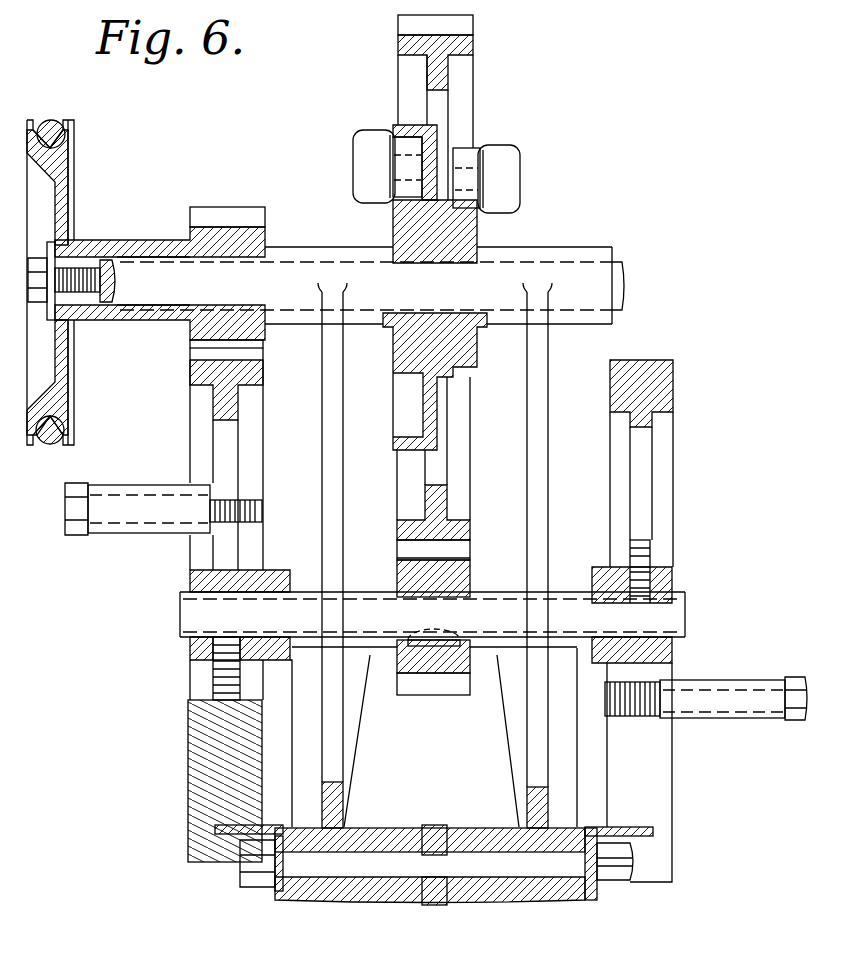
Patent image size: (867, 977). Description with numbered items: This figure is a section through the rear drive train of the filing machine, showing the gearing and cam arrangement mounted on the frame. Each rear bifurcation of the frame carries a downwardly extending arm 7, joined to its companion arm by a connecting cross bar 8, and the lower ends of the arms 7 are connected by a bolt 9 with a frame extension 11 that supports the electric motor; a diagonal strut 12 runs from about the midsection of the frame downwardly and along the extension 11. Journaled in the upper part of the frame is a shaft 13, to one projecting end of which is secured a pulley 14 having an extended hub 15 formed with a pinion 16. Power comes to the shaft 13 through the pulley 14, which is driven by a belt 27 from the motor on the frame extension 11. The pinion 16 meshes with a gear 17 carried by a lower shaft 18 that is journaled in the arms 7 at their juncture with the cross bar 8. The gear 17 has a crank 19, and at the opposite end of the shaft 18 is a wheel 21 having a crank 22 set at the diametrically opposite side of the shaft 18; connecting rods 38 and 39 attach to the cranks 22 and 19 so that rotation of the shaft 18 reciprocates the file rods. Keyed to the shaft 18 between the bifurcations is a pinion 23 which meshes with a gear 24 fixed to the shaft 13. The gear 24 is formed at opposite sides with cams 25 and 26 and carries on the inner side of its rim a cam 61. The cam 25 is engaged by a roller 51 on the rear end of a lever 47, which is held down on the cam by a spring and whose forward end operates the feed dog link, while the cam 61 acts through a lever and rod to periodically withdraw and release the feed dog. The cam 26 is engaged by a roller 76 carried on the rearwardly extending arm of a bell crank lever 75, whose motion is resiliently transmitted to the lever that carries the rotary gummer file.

The arm 7 is at (358, 746).
The connecting cross bar 8 is at (343, 466).
The bolt 9 is at (493, 870).
The frame extension 11 is at (243, 838).
The diagonal strut 12 is at (426, 825).
The shaft 13 is at (618, 280).
The pulley 14 is at (75, 158).
The extended hub 15 is at (112, 245).
The pinion 16 is at (220, 207).
The gear 17 is at (197, 420).
The shaft 18 is at (190, 616).
The crank 19 is at (78, 535).
The wheel 21 is at (675, 385).
The crank 22 is at (790, 677).
The pinion 23 is at (430, 690).
The gear 24 is at (466, 25).
The cam 25 is at (477, 228).
The cam 26 is at (393, 128).
The belt 27 is at (50, 122).
The connecting rod 38 is at (735, 722).
The connecting rod 39 is at (130, 535).
The lever 47 is at (515, 157).
The roller 51 is at (467, 158).
The cam 61 is at (400, 65).
The bell crank lever 75 is at (358, 176).
The roller 76 is at (400, 200).